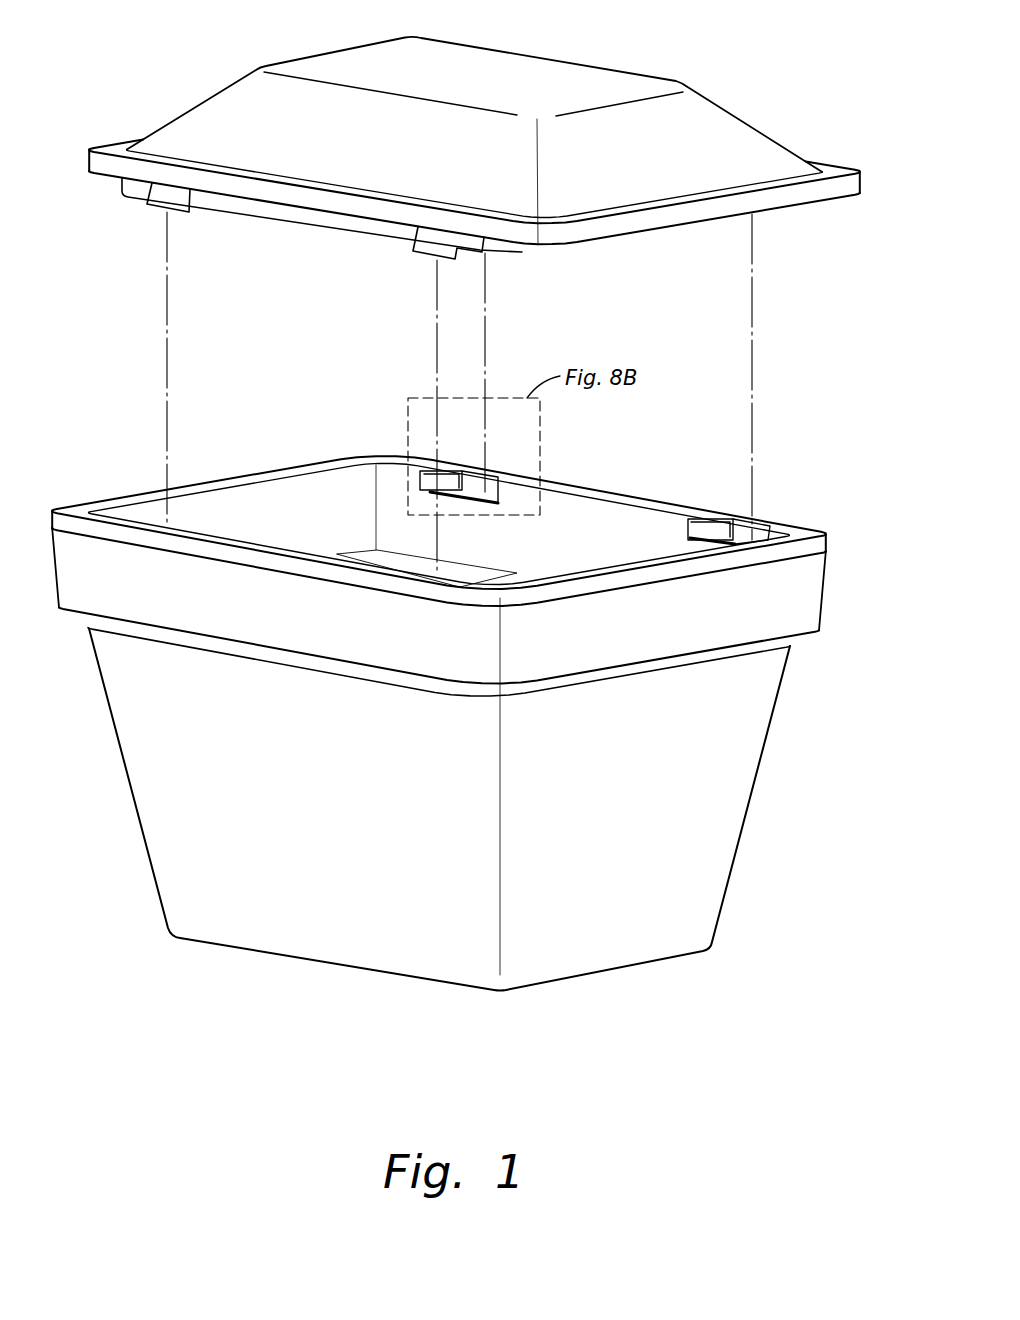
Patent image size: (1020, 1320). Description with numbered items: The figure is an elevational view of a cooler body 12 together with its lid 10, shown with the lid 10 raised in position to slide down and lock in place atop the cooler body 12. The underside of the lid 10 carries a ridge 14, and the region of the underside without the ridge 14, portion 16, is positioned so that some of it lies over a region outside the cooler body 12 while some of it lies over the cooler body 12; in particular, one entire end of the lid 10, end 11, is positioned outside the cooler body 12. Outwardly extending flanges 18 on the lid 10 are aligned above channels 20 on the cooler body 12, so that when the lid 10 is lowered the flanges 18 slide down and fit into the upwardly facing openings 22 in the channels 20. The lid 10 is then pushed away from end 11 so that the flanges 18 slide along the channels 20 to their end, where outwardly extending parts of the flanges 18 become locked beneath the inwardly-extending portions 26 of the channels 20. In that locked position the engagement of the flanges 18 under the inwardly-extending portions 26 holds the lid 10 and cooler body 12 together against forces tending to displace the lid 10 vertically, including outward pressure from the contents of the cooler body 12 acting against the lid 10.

The lid 10 is at (535, 56).
The end 11 is at (810, 204).
The cooler body 12 is at (316, 960).
The ridge 14 is at (295, 222).
The portion 16 is at (585, 253).
The flanges 18 is at (187, 205).
The channels 20 is at (447, 483).
The openings 22 is at (491, 481).
The inwardly-extending portions 26 is at (426, 492).